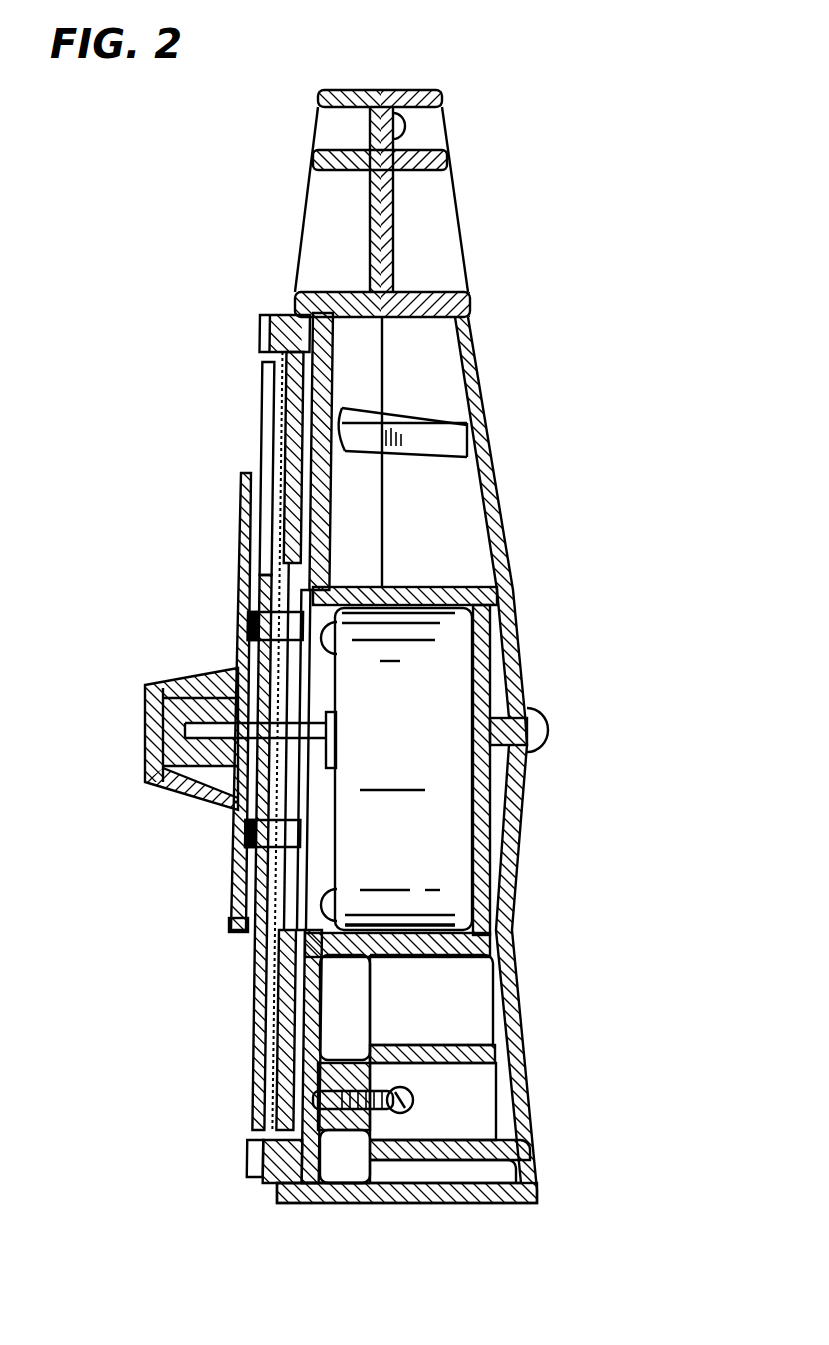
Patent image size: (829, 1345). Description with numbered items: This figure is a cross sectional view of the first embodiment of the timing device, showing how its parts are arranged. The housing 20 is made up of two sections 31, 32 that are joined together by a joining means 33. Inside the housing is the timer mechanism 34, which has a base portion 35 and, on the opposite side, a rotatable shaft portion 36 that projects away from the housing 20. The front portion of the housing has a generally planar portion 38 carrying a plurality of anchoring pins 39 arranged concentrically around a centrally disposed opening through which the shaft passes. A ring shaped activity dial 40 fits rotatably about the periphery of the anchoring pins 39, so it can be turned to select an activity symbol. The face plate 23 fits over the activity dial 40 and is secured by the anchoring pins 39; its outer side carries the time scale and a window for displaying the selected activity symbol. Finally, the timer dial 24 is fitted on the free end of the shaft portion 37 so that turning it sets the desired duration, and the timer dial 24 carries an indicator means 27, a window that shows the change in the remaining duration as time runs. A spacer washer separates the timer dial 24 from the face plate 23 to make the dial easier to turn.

The device 20 is at (403, 105).
The face plate 23 is at (263, 1022).
The timer dial 24 is at (145, 736).
The indicator means 27 is at (243, 573).
The housing section 31 is at (326, 1188).
The housing section 32 is at (430, 1193).
The joining means 33 is at (410, 1102).
The timer mechanism 34 is at (442, 590).
The base portion 35 is at (425, 727).
The rotatable shaft portion 36 is at (258, 741).
The shaft portion 37 is at (240, 693).
The generally planar portion 38 is at (264, 354).
The anchoring pins 39 is at (238, 925).
The activity dial 40 is at (266, 1165).